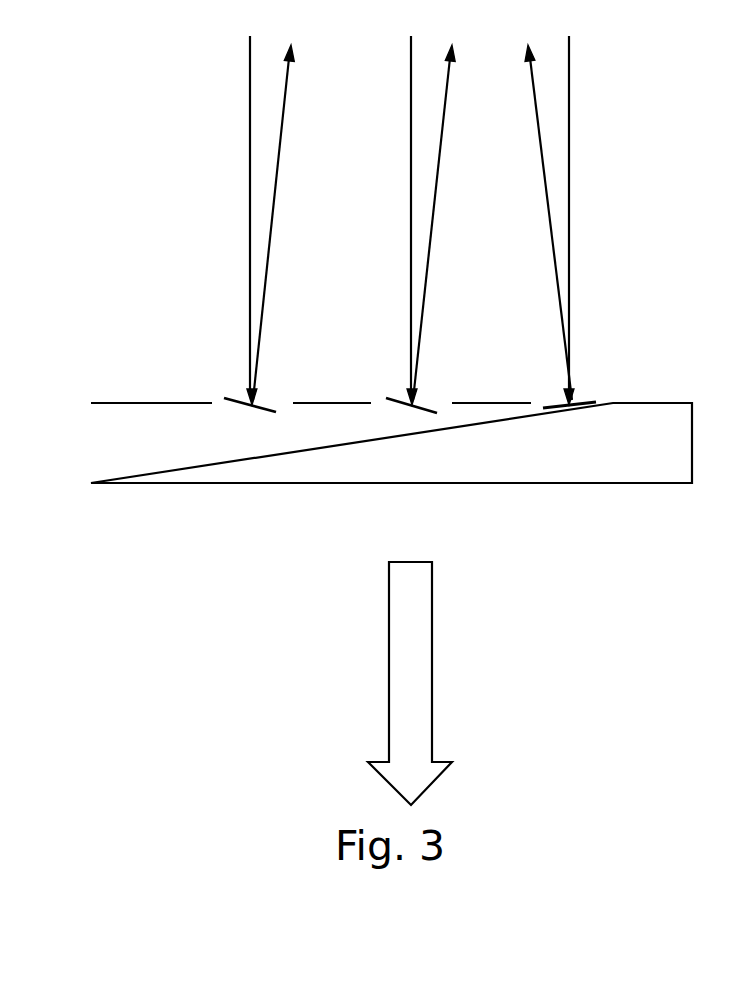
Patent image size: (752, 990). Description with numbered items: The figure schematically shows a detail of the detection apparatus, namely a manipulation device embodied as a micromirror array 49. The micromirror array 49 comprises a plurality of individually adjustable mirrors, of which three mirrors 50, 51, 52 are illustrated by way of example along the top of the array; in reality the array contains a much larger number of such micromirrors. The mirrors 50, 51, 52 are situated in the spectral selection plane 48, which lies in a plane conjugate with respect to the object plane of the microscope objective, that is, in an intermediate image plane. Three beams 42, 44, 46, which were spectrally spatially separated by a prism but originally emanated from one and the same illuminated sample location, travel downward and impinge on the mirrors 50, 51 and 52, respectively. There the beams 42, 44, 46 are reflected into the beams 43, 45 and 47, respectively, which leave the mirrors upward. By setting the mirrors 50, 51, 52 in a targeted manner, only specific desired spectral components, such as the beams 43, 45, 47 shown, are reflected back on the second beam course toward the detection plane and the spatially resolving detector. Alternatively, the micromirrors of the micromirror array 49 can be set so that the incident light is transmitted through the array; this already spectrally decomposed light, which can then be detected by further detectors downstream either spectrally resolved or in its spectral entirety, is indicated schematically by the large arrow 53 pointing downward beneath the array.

The beam 42 is at (248, 175).
The reflected beam 43 is at (283, 128).
The beam 44 is at (411, 175).
The reflected beam 45 is at (443, 130).
The beam 46 is at (570, 137).
The reflected beam 47 is at (542, 179).
The spectral selection plane 48 is at (110, 401).
The micromirror array 49 is at (135, 450).
The mirror 50 is at (232, 402).
The mirror 51 is at (390, 400).
The mirror 52 is at (587, 407).
The arrow 53 is at (418, 687).